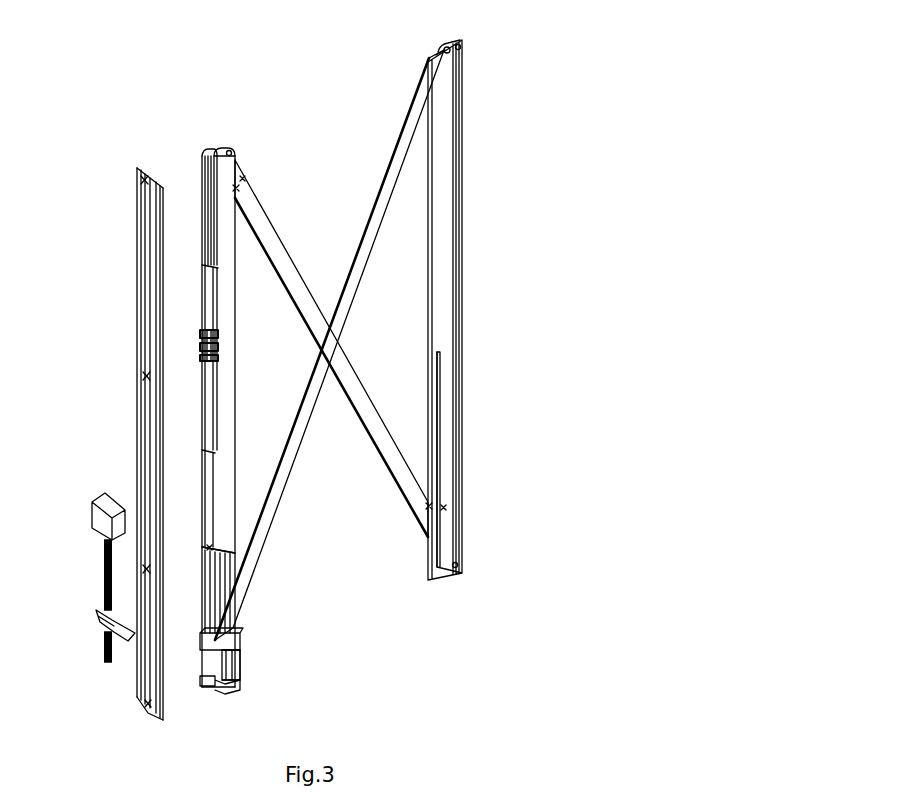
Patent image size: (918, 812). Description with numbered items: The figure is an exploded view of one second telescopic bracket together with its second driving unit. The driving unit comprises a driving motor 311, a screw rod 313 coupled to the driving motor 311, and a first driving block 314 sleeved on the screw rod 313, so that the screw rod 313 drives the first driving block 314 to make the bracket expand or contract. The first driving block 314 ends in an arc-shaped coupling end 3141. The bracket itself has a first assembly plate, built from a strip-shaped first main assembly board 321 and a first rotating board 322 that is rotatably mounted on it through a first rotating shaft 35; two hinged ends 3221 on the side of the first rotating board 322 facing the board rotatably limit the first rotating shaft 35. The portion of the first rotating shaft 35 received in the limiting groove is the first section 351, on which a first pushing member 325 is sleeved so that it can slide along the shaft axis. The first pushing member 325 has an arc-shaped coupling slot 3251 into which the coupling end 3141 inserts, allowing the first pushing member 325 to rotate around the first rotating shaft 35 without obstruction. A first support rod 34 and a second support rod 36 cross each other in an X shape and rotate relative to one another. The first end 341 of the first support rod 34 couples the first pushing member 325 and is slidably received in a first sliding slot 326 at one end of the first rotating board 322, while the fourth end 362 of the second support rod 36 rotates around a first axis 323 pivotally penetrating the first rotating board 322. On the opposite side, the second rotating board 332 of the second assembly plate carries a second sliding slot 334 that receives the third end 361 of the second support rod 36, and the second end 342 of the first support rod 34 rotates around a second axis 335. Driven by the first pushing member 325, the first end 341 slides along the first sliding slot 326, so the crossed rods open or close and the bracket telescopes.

The driving motor 311 is at (92, 528).
The screw rod 313 is at (104, 585).
The first driving block 314 is at (99, 625).
The coupling end 3141 is at (104, 658).
The first main assembly board 321 is at (137, 200).
The first rotating board 322 is at (238, 167).
The hinged ends 3221 is at (204, 158).
The first axis 323 is at (232, 150).
The first pushing member 325 is at (220, 635).
The coupling slot 3251 is at (232, 680).
The first sliding slot 326 is at (225, 647).
The second rotating board 332 is at (442, 300).
The second sliding slot 334 is at (438, 497).
The second axis 335 is at (452, 47).
The first support rod 34 is at (380, 196).
The first end 341 is at (235, 638).
The second end 342 is at (464, 50).
The first rotating shaft 35 is at (210, 410).
The first section 351 is at (228, 580).
The second support rod 36 is at (381, 428).
The third end 361 is at (430, 505).
The fourth end 362 is at (240, 190).